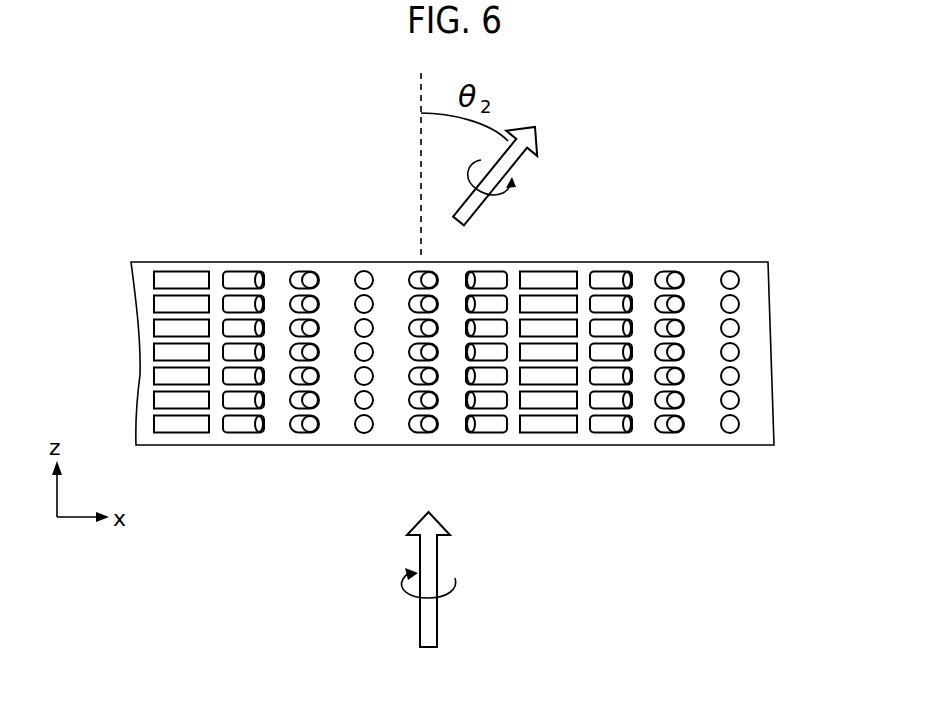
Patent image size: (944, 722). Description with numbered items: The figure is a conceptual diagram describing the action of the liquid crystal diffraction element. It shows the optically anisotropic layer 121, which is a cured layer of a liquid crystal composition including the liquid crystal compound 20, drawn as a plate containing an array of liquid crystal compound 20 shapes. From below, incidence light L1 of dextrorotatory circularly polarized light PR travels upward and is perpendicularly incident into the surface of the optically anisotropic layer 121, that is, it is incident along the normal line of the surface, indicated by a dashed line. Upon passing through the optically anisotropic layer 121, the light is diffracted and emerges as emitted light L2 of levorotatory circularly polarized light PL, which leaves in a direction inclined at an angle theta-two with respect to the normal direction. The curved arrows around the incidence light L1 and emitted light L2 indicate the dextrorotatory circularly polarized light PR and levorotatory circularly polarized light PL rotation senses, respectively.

The optically anisotropic layer 121 is at (750, 293).
The liquid crystal compound 20 is at (723, 353).
The incidence light L1 is at (431, 624).
The emitted light L2 is at (538, 138).
The levorotatory circularly polarized light PL is at (517, 195).
The dextrorotatory circularly polarized light PR is at (400, 582).